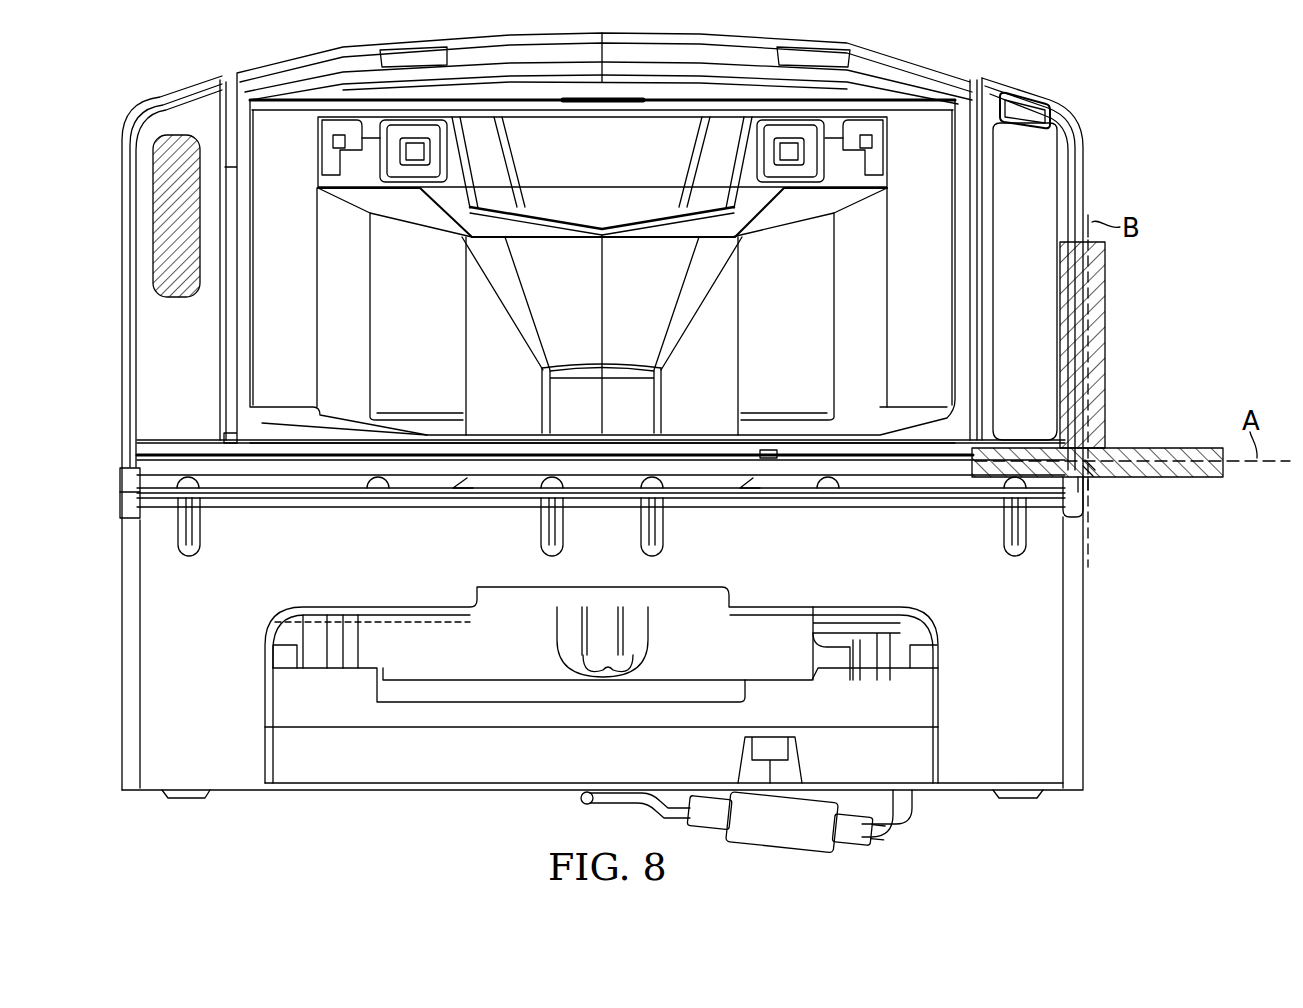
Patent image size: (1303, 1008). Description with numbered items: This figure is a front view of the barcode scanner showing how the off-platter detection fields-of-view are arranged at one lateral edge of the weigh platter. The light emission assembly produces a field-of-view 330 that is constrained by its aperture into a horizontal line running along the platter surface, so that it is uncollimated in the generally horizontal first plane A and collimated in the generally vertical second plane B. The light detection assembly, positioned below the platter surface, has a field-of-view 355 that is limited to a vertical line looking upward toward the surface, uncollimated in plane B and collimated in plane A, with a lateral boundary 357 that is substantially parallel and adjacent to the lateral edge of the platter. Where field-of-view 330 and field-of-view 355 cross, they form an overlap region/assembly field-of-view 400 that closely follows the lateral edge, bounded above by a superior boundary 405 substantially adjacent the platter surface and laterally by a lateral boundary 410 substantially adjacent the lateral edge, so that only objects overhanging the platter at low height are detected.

The field-of-view 330 is at (1215, 488).
The field-of-view 355 is at (1118, 325).
The lateral boundary 357 is at (1060, 320).
The overlap region/assembly field-of-view 400 is at (1093, 467).
The superior boundary 405 is at (1093, 482).
The lateral boundary 410 is at (1083, 480).